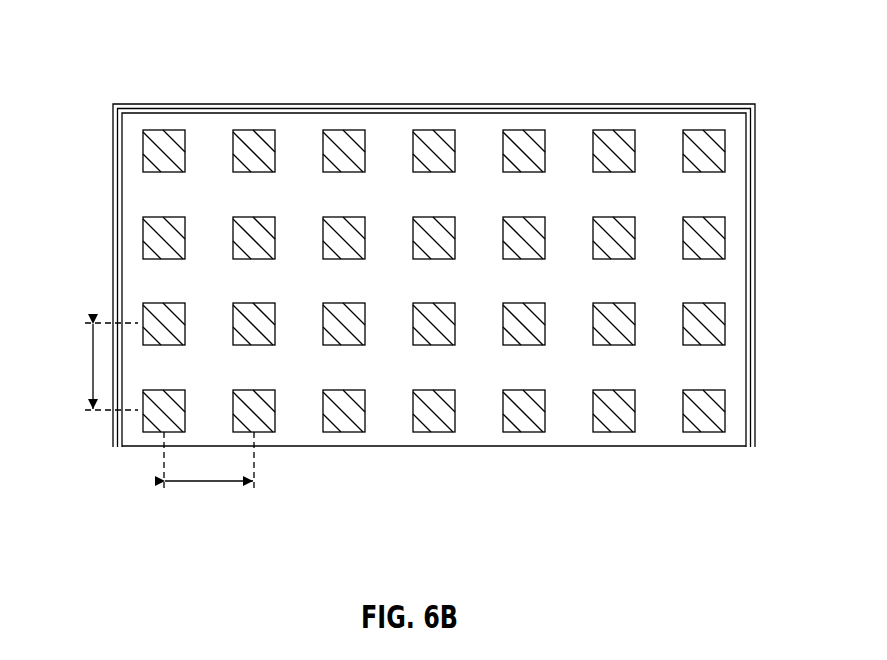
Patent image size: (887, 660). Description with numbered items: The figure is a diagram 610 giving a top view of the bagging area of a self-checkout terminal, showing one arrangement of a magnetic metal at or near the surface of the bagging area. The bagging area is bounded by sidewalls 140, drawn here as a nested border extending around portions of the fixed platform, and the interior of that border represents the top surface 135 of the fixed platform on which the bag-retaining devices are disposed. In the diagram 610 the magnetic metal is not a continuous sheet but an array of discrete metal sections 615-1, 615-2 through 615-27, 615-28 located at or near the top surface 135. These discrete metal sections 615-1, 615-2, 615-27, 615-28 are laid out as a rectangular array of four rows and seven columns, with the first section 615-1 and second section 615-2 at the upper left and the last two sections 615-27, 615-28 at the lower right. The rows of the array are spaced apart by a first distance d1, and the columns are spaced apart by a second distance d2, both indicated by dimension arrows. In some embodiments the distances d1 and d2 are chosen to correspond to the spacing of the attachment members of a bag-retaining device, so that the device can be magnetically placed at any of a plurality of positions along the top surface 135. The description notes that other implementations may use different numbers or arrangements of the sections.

The diagram 610 is at (783, 41).
The sidewalls 140 is at (755, 273).
The top surface 135 is at (475, 139).
The discrete metal section 615-1 is at (165, 130).
The discrete metal section 615-2 is at (253, 130).
The discrete metal section 615-27 is at (616, 432).
The discrete metal section 615-28 is at (705, 432).
The first distance d1 is at (93, 367).
The second distance d2 is at (209, 481).